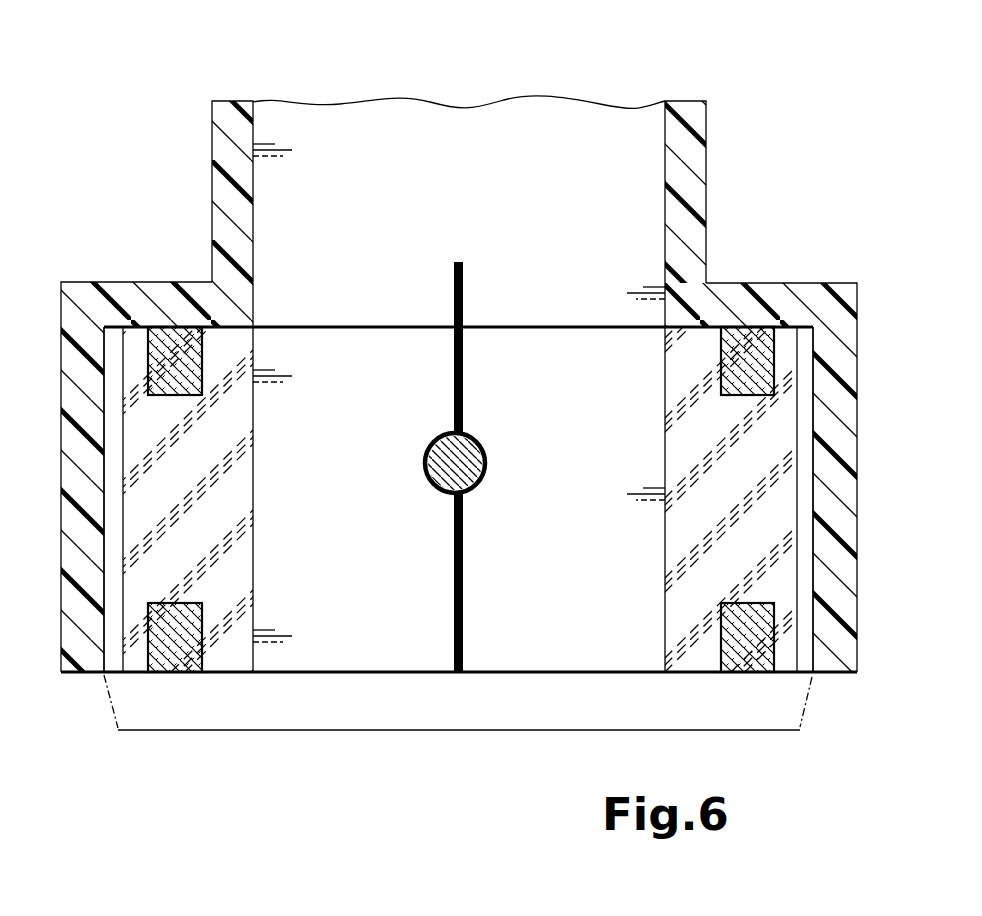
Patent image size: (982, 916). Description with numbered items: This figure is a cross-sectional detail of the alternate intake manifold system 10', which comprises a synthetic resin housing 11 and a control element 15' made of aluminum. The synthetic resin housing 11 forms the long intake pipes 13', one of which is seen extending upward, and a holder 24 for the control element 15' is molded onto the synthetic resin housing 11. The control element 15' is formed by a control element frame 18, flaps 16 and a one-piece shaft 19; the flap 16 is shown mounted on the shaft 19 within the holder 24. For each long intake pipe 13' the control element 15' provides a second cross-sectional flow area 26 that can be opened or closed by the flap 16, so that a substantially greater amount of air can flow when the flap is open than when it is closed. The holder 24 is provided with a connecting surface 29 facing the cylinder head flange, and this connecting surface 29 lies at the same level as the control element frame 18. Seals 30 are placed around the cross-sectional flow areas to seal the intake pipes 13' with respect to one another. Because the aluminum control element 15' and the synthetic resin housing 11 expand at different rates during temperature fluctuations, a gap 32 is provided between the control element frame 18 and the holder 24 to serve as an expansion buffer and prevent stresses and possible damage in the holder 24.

The intake manifold system 10' is at (459, 446).
The synthetic resin housing 11 is at (817, 298).
The long intake pipe 13' is at (459, 178).
The control element 15' is at (163, 769).
The flap 16 is at (453, 288).
The control element frame 18 is at (668, 368).
The one-piece shaft 19 is at (477, 458).
The holder 24 is at (465, 727).
The second cross-sectional flow area 26 is at (584, 655).
The connecting surface 29 is at (69, 677).
The seal 30 is at (183, 333).
The gap 32 is at (112, 667).